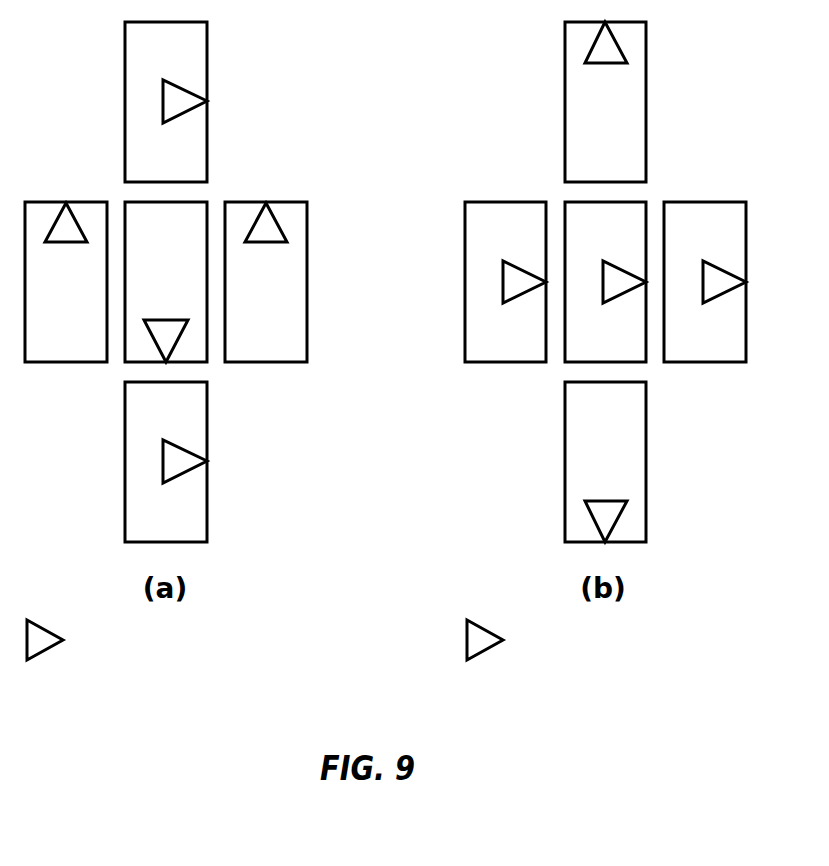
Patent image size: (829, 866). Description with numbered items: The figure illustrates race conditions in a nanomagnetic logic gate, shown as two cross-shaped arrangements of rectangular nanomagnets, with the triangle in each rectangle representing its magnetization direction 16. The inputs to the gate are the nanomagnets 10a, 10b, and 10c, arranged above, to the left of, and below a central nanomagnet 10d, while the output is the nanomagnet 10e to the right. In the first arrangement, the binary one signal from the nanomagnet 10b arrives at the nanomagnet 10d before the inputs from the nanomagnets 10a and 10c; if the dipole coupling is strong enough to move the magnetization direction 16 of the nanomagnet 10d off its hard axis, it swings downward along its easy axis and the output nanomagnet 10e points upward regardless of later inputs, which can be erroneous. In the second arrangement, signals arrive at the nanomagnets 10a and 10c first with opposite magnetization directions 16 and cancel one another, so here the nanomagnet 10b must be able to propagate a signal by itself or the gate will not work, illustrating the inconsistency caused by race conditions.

The nanomagnet 10a is at (140, 64).
The nanomagnet 10b is at (40, 289).
The nanomagnet 10c is at (140, 424).
The nanomagnet 10d is at (140, 289).
The nanomagnet 10e is at (240, 289).
The magnetization direction 16 is at (390, 650).